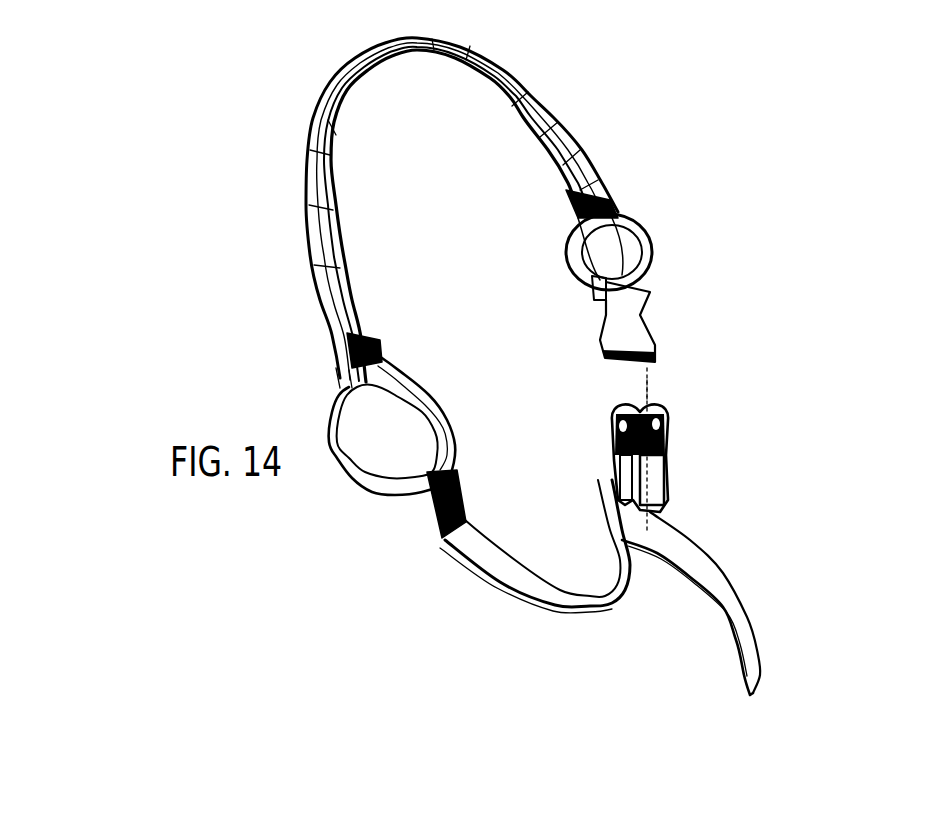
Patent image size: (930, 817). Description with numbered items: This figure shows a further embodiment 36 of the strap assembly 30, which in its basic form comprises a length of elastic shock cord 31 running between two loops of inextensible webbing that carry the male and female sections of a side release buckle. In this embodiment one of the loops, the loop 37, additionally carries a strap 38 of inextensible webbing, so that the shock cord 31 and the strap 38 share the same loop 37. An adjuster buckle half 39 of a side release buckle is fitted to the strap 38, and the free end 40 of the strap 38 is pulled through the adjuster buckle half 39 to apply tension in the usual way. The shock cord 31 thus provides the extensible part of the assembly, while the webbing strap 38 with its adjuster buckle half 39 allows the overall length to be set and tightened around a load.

The strap assembly 30 is at (276, 122).
The shock cord 31 is at (548, 112).
The further embodiment 36 is at (150, 260).
The loop 37 is at (352, 495).
The strap 38 is at (537, 592).
The adjuster buckle half 39 is at (655, 458).
The free end 40 is at (753, 665).